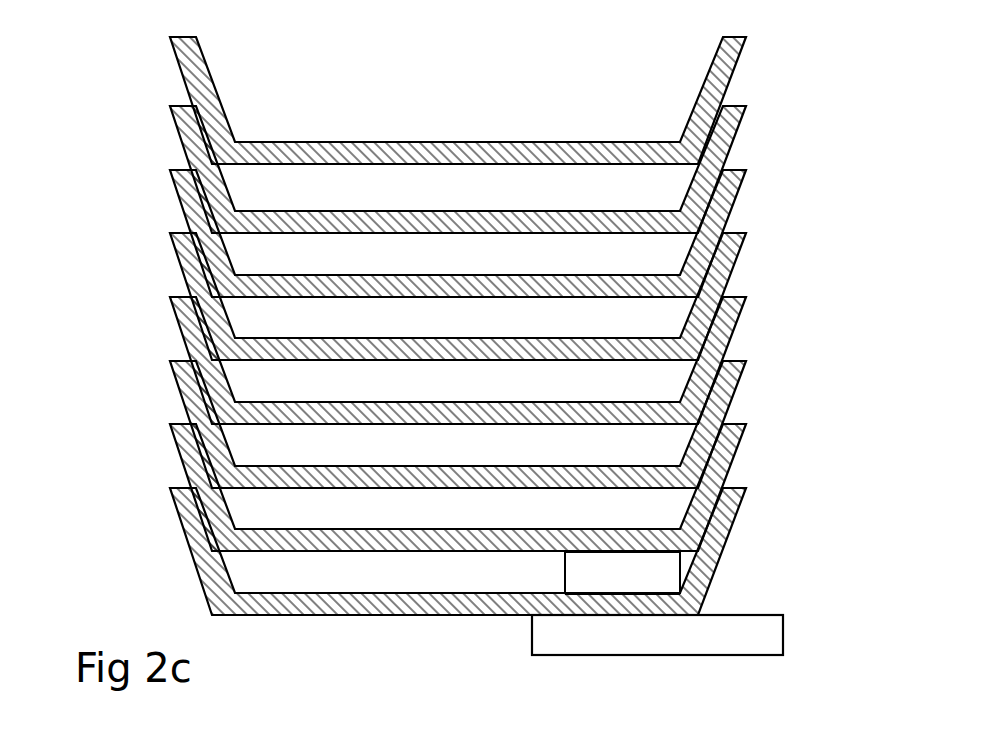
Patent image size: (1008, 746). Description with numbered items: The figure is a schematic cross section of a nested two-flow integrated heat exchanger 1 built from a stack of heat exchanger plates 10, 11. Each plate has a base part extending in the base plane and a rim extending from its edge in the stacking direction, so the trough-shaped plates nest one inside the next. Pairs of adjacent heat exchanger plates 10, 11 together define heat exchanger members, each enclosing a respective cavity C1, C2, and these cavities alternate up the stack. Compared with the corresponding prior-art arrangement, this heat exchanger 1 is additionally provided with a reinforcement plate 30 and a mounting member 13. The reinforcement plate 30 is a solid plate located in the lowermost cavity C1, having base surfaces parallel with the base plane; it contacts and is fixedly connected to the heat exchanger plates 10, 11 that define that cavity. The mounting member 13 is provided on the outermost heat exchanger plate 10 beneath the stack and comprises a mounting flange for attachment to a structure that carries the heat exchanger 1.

The heat exchanger 1 is at (126, 147).
The heat exchanger plate 10 is at (722, 118).
The heat exchanger plate 11 is at (746, 37).
The mounting member 13 is at (760, 641).
The reinforcement plate 30 is at (645, 565).
The cavity C1 is at (272, 182).
The cavity C2 is at (272, 245).